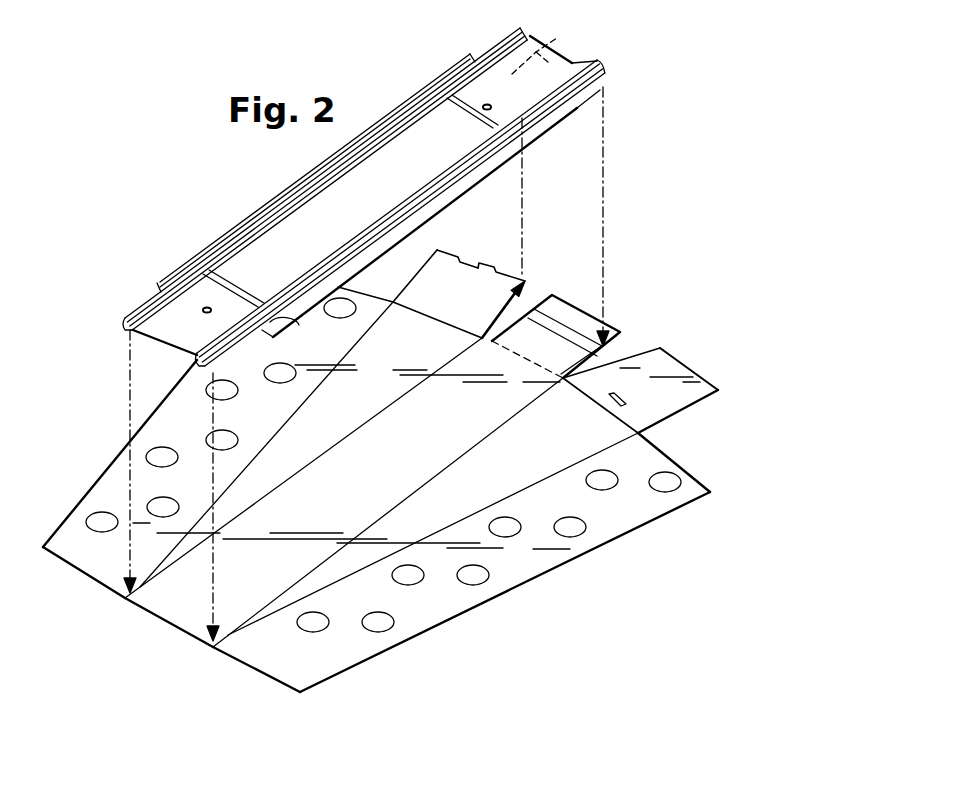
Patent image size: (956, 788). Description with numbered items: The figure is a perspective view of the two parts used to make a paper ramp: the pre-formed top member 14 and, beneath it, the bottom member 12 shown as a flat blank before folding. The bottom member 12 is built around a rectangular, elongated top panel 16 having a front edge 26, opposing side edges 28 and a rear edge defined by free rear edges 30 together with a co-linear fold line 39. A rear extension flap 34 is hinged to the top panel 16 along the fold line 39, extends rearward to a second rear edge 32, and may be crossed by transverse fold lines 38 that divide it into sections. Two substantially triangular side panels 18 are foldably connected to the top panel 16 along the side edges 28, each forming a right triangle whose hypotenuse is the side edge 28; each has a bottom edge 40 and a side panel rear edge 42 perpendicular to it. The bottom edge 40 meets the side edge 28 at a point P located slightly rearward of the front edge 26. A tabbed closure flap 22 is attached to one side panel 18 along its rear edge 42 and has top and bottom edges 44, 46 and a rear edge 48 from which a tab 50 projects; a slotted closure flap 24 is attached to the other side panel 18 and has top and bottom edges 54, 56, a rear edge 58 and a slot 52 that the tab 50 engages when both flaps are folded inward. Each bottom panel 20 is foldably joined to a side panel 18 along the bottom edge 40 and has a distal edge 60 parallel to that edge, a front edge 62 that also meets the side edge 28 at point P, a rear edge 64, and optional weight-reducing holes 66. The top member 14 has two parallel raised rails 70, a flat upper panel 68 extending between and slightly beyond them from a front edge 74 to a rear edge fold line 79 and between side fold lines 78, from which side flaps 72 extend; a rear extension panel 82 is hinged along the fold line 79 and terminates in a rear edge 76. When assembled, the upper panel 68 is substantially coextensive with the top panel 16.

The bottom member 12 is at (710, 353).
The top member 14 is at (578, 38).
The top panel 16 is at (365, 471).
The side panels 18 is at (370, 379).
The bottom panels 20 is at (245, 411).
The tabbed closure flap 22 is at (443, 301).
The slotted closure flap 24 is at (646, 404).
The front edge 26 is at (168, 626).
The side edges 28 is at (365, 418).
The free rear edges 30 is at (577, 370).
The second rear edge 32 is at (593, 317).
The rear extension flap 34 is at (530, 333).
The fold lines 38 is at (575, 312).
The fold line 39 is at (515, 366).
The bottom edge 40 is at (354, 346).
The side panel rear edge 42 is at (403, 309).
The top edge 44 is at (517, 306).
The bottom edge 46 is at (426, 263).
The rear edge 48 is at (447, 250).
The tab 50 is at (487, 258).
The slot 52 is at (612, 395).
The top edge 54 is at (644, 352).
The bottom edge 56 is at (686, 412).
The rear edge 58 is at (713, 386).
The distal edge 60 is at (186, 372).
The front edge 62 is at (80, 568).
The rear edge 64 is at (676, 462).
The holes 66 is at (164, 467).
The upper panel 68 is at (333, 221).
The raised rails 70 is at (290, 198).
The side flaps 72 is at (433, 81).
The front edge 74 is at (152, 331).
The rear edge 76 is at (530, 26).
The fold lines 78 is at (600, 93).
The rear edge fold line 79 is at (549, 43).
The rear extension panel 82 is at (575, 61).
The point P is at (148, 583).